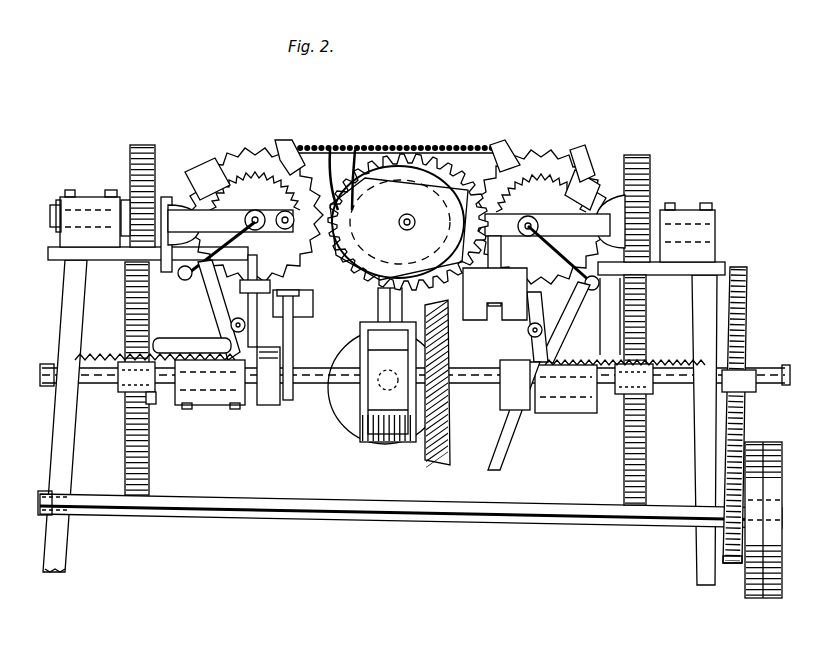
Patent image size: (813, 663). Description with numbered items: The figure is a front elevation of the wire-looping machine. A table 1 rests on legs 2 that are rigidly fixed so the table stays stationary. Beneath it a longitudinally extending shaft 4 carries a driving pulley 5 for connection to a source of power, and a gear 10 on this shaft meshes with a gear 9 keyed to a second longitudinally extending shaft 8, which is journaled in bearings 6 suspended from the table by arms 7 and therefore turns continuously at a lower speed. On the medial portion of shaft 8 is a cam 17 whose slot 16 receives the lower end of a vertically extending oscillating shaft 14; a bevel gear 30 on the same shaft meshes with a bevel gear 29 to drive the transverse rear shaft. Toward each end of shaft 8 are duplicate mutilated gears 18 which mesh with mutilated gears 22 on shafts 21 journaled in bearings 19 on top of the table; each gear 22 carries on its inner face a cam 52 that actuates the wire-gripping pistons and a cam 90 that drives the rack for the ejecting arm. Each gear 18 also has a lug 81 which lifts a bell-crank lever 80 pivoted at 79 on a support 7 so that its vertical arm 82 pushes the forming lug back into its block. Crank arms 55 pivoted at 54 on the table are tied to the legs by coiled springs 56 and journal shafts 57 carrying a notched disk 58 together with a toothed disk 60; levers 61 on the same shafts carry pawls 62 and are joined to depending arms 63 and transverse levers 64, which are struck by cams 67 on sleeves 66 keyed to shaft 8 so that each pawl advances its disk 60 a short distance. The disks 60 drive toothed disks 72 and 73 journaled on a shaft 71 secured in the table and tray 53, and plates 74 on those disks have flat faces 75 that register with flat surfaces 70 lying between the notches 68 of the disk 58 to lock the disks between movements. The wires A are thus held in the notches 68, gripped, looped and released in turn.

The table 1 is at (403, 247).
The legs 2 is at (62, 290).
The longitudinally extending shaft 4 is at (200, 512).
The driving pulley 5 is at (776, 442).
The bearings 6 is at (222, 405).
The arms 7 is at (594, 318).
The longitudinally extending shaft 8 is at (298, 385).
The gear 9 is at (747, 328).
The gear 10 is at (728, 565).
The vertically extending oscillating shaft 14 is at (378, 305).
The slot 16 is at (383, 443).
The cam 17 is at (335, 405).
The mutilated gears 18 is at (149, 458).
The bearings 19 is at (82, 197).
The shafts 21 is at (56, 205).
The mutilated gear 22 is at (143, 145).
The bevel gear 29 is at (354, 432).
The bevel gear 30 is at (432, 462).
The cams 52 is at (661, 258).
The tray 53 is at (396, 143).
The pivot 54 is at (182, 280).
The crank arms 55 is at (212, 305).
The coiled springs 56 is at (92, 355).
The shafts 57 is at (257, 211).
The disk 58 is at (262, 148).
The disks 60 is at (200, 172).
The levers 61 is at (166, 197).
The pawl 62 is at (178, 205).
The depending arms 63 is at (313, 300).
The levers 64 is at (257, 320).
The sleeves 66 is at (266, 405).
The cam 67 is at (293, 340).
The notches 68 is at (290, 140).
The flat surfaces 70 is at (585, 162).
The shaft 71 is at (408, 213).
The disk 72 is at (330, 150).
The disk 73 is at (385, 155).
The plates 74 is at (356, 148).
The flat faces 75 is at (362, 264).
The pivot 79 is at (236, 318).
The bell-crank lever 80 is at (165, 338).
The lug 81 is at (155, 402).
The vertical arm 82 is at (398, 192).
The cam 90 is at (126, 200).
The wires A is at (458, 146).